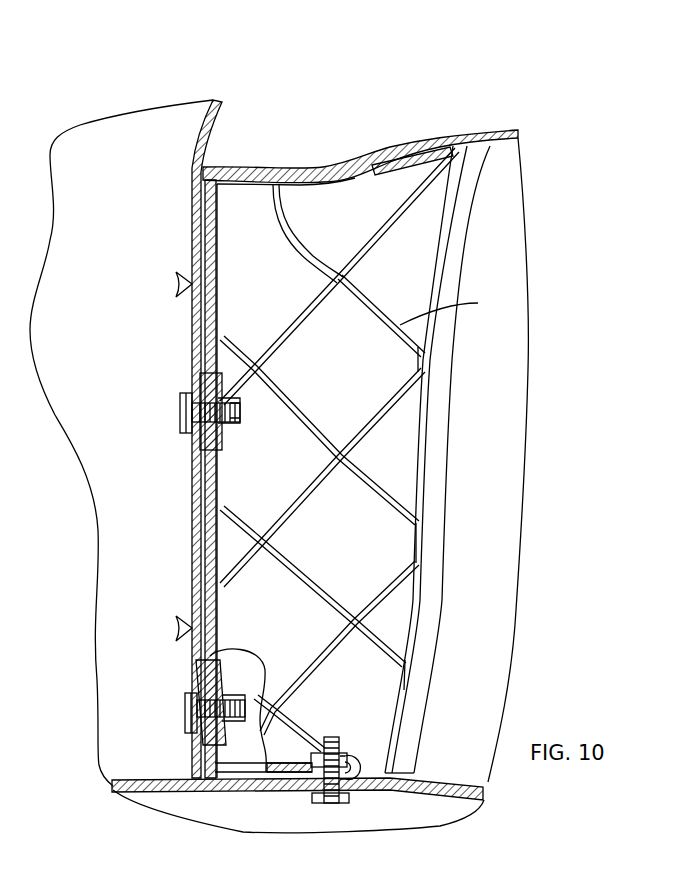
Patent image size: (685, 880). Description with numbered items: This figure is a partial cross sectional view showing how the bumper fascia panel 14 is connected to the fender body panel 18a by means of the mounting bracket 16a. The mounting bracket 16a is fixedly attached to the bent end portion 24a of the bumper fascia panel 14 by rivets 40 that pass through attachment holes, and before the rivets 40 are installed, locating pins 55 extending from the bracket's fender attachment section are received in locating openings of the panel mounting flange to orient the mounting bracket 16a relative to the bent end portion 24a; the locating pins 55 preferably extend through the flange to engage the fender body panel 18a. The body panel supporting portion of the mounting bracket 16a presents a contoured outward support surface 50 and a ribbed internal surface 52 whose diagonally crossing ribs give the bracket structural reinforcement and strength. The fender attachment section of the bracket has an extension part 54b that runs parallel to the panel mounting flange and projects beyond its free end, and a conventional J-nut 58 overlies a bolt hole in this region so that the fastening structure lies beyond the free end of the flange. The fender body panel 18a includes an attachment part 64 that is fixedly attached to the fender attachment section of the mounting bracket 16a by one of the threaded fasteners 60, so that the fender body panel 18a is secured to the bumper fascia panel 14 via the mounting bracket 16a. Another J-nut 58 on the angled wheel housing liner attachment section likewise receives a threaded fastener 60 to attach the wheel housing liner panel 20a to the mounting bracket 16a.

The bumper fascia panel 14 is at (330, 118).
The mounting bracket 16a is at (448, 511).
The fender body panel 18a is at (110, 162).
The wheel housing liner panel 20a is at (259, 795).
The bent end portion 24a is at (509, 126).
The rivets 40 is at (416, 163).
The contoured outward support surface 50 is at (378, 370).
The ribbed internal surface 52 is at (452, 309).
The extension part 54b is at (218, 290).
The locating pins 55 is at (178, 282).
The J-nut 58 is at (210, 752).
The threaded fasteners 60 is at (180, 412).
The attachment part 64 is at (192, 343).